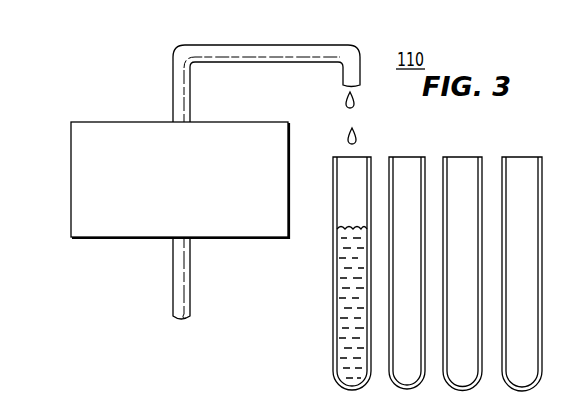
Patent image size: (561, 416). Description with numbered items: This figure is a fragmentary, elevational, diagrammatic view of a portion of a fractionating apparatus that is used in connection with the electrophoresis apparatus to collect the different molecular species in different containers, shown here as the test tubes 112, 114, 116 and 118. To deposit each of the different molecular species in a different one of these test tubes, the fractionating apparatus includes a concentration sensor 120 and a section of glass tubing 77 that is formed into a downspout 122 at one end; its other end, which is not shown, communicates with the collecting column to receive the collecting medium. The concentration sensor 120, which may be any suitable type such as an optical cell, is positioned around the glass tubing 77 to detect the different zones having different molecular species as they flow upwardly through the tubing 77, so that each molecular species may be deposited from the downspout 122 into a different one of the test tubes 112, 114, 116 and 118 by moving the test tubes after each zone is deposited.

The test tube 112 is at (353, 163).
The test tube 114 is at (405, 164).
The test tube 116 is at (457, 164).
The test tube 118 is at (515, 164).
The concentration sensor 120 is at (84, 162).
The downspout 122 is at (357, 50).
The glass tubing 77 is at (180, 276).